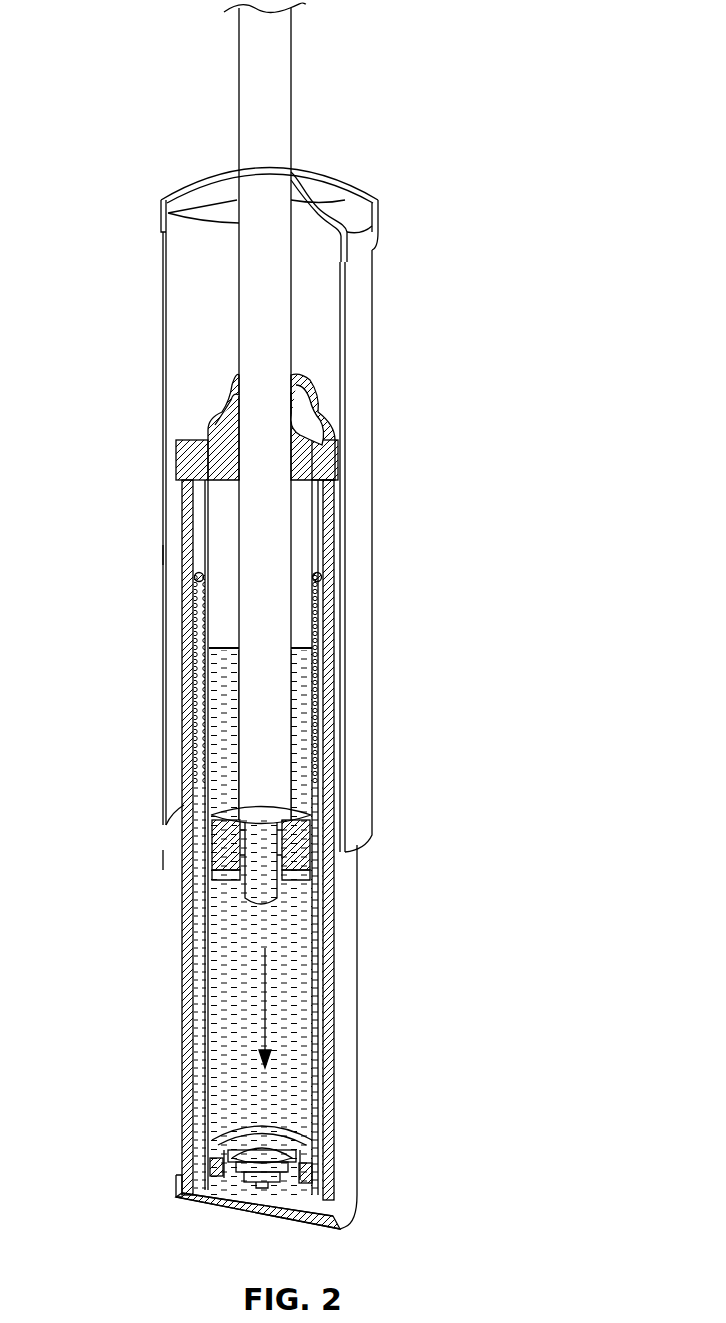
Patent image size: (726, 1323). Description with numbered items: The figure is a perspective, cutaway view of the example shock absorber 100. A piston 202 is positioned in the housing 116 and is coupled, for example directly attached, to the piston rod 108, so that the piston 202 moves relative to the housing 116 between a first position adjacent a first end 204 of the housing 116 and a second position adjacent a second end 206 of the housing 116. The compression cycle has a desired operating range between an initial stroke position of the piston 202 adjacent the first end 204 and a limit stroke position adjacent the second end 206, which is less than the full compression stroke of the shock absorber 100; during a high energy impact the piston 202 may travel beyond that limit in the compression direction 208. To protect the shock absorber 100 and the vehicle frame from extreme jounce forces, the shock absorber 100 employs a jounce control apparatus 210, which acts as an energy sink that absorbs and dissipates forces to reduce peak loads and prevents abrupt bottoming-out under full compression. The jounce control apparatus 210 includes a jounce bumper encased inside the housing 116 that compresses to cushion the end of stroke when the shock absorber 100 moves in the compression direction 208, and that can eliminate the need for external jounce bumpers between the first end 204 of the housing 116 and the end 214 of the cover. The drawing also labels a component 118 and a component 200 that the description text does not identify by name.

The shock absorber 100 is at (152, 862).
The piston rod 108 is at (239, 55).
The housing 116 is at (181, 1015).
The outer tube 118 is at (163, 288).
The inner tube 200 is at (185, 505).
The piston 202 is at (315, 847).
The first end 204 is at (332, 415).
The second end 206 is at (300, 1218).
The compression direction 208 is at (267, 1012).
The jounce control apparatus 210 is at (152, 553).
The end of the cover 214 is at (188, 187).